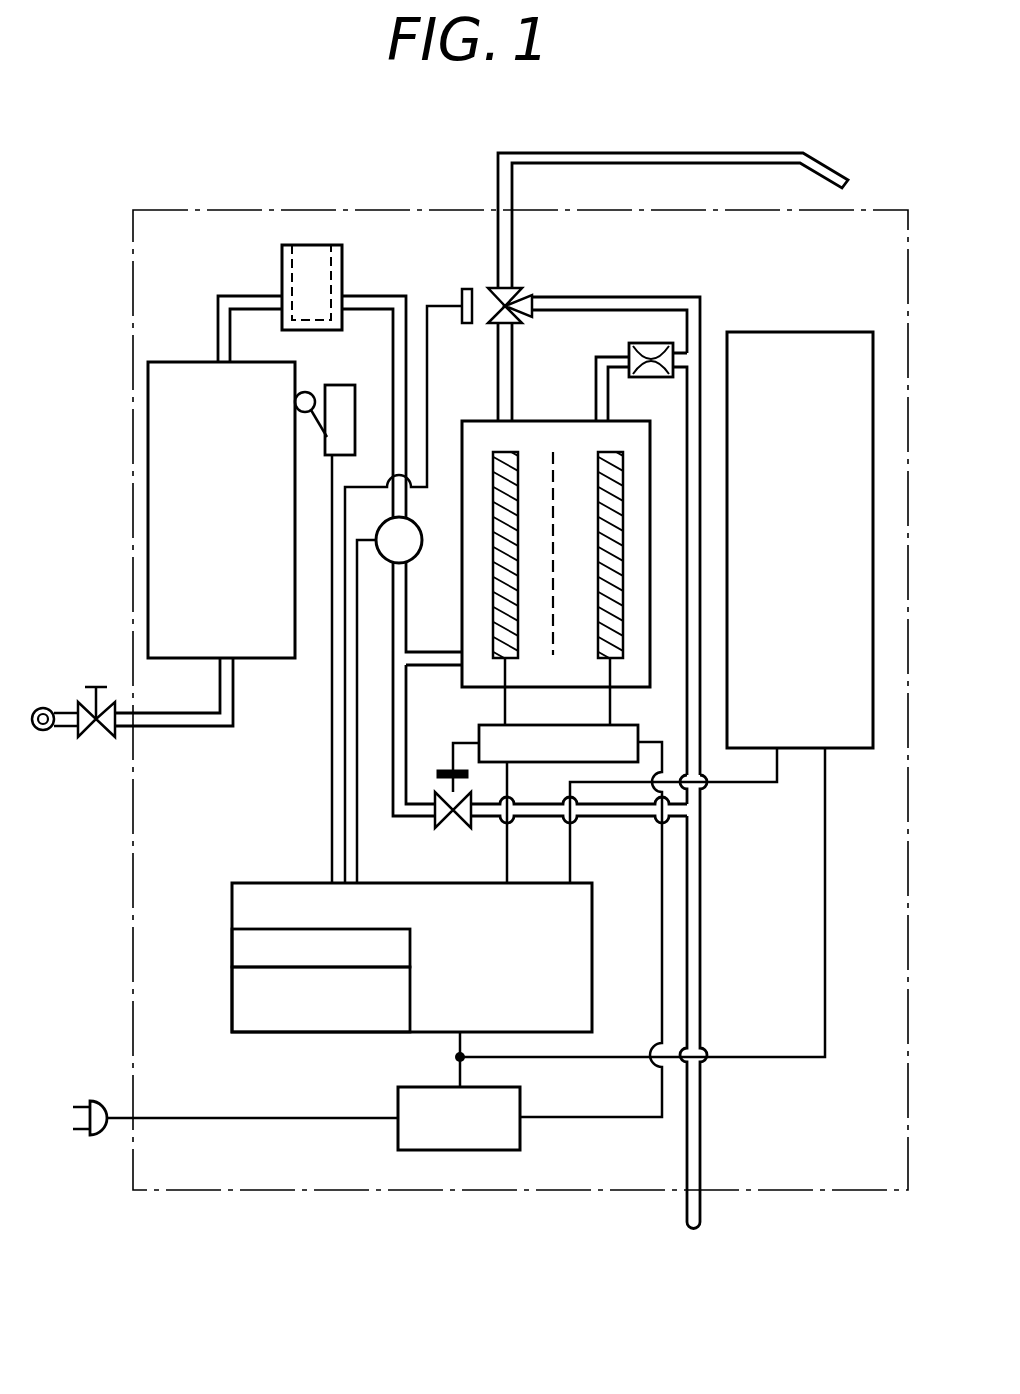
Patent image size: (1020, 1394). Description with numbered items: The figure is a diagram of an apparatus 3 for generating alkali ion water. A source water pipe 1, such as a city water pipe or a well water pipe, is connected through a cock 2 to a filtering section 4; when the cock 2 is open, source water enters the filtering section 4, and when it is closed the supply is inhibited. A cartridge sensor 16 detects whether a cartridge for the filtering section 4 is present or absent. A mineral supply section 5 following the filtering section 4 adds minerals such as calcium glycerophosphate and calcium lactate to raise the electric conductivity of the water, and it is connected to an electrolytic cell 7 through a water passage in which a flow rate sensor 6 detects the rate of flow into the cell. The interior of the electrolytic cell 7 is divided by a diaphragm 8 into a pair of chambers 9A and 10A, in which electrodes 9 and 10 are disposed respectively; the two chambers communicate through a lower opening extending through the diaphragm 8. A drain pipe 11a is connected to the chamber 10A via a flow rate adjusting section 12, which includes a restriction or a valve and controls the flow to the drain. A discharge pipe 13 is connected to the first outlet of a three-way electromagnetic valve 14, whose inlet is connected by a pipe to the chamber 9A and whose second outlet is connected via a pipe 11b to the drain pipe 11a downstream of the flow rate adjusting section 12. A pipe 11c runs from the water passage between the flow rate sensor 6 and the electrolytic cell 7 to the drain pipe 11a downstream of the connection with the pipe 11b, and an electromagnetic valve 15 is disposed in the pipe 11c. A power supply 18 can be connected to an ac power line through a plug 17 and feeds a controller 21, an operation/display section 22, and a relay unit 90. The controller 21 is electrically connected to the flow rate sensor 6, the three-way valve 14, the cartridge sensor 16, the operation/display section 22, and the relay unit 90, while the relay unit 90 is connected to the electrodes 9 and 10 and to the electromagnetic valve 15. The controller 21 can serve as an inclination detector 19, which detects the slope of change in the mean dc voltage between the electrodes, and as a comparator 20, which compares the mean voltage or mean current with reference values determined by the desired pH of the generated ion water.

The source water pipe 1 is at (40, 702).
The cock 2 is at (102, 690).
The apparatus 3 is at (892, 208).
The filtering section 4 is at (178, 360).
The mineral supply section 5 is at (344, 272).
The flow rate sensor 6 is at (419, 530).
The electrolytic cell 7 is at (534, 421).
The diaphragm 8 is at (546, 650).
The electrode 9 is at (467, 551).
The chamber 9A is at (480, 597).
The electrode 10 is at (592, 550).
The chamber 10A is at (582, 648).
The drain pipe 11a is at (682, 398).
The pipe 11b is at (621, 297).
The pipe 11c is at (628, 830).
The flow rate adjusting section 12 is at (632, 343).
The discharge pipe 13 is at (822, 154).
The three-way electromagnetic valve 14 is at (521, 293).
The electromagnetic valve 15 is at (454, 830).
The cartridge sensor 16 is at (359, 392).
The plug 17 is at (90, 1094).
The power supply 18 is at (524, 1111).
The inclination detector 19 is at (232, 992).
The comparator 20 is at (232, 950).
The controller 21 is at (594, 952).
The operation/display section 22 is at (832, 333).
The relay unit 90 is at (478, 719).